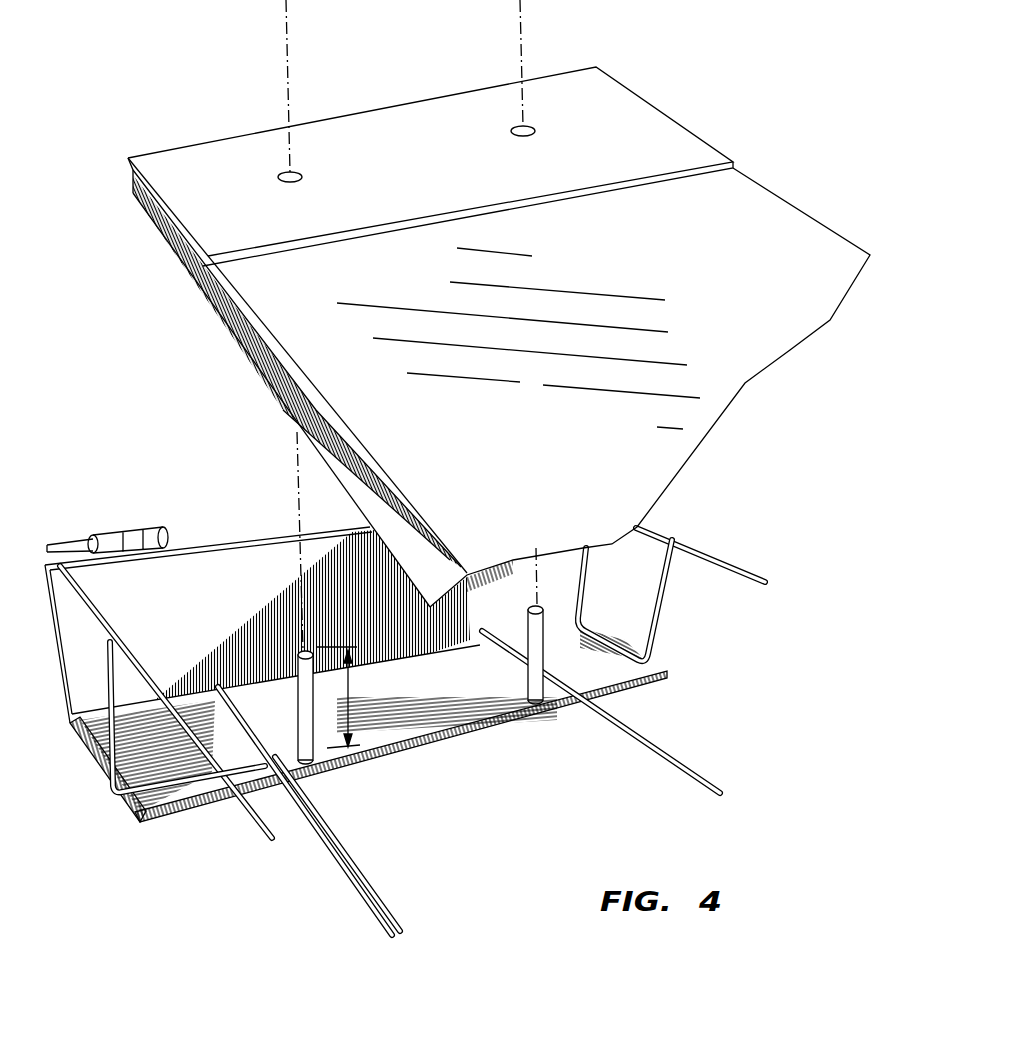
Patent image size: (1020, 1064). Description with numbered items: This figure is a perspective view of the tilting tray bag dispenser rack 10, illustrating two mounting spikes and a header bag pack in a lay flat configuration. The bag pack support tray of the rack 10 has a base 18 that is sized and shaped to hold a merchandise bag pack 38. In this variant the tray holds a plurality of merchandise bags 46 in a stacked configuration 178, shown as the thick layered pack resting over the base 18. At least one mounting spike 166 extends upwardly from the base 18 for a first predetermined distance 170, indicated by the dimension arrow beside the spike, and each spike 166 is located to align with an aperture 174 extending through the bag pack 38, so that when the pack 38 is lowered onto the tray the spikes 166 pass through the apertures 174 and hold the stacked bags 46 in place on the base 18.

The tilting tray bag dispenser rack 10 is at (740, 524).
The base 18 is at (530, 732).
The merchandise bag pack 38 is at (735, 197).
The bags 46 is at (790, 223).
The mounting spike 166 is at (310, 720).
The first predetermined distance 170 is at (350, 690).
The aperture 174 is at (305, 173).
The stacked configuration 178 is at (217, 302).